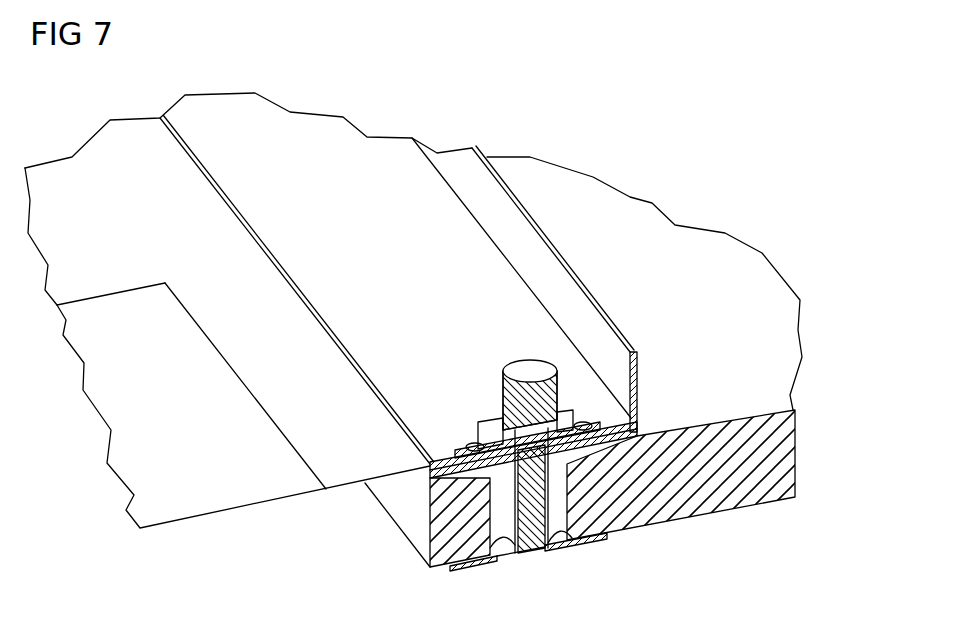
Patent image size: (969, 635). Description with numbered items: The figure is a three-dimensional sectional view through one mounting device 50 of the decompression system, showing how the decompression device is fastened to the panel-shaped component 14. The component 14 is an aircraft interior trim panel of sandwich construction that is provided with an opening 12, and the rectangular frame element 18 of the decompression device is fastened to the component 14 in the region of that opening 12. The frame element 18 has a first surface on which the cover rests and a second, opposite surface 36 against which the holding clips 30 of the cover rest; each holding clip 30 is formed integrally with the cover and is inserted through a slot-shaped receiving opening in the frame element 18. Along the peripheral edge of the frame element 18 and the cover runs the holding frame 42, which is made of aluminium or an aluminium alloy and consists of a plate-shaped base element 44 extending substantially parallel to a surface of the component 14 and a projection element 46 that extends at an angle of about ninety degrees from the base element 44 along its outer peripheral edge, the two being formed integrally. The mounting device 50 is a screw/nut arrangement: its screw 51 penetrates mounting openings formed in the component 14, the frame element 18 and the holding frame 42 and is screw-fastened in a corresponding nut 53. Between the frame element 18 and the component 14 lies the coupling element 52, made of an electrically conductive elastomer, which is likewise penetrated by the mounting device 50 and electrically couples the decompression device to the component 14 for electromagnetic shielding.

The opening 12 is at (412, 532).
The component 14 is at (633, 208).
The frame element 18 is at (318, 362).
The holding clip 30 is at (208, 362).
The second surface 36 is at (85, 170).
The holding frame 42 is at (227, 116).
The base element 44 is at (350, 140).
The projection element 46 is at (452, 160).
The mounting device 50 is at (535, 494).
The screw 51 is at (527, 543).
The coupling element 52 is at (605, 445).
The nut 53 is at (522, 370).